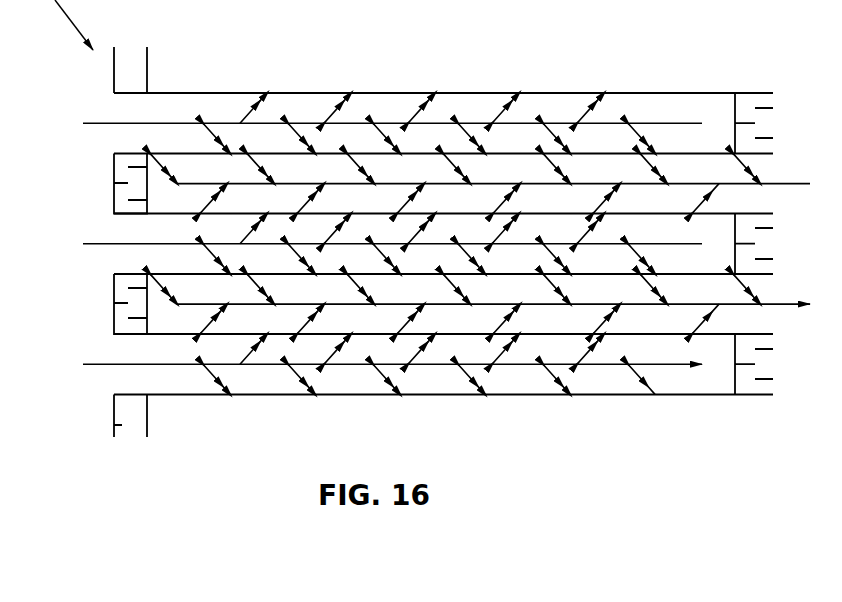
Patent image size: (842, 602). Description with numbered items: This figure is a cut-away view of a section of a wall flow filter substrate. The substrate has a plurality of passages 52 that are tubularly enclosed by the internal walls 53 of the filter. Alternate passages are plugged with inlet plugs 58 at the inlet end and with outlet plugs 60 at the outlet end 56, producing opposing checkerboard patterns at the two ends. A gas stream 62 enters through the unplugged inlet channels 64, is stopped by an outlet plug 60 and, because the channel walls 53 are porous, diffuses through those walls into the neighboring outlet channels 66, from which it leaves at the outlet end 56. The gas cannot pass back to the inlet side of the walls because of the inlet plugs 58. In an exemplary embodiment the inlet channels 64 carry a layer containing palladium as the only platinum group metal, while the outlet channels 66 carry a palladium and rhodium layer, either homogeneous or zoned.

The passages 52 is at (153, 155).
The internal walls 53 is at (401, 150).
The outlet end 56 is at (785, 92).
The inlet plugs 58 is at (120, 73).
The outlet plugs 60 is at (773, 123).
The gas stream 62 is at (192, 122).
The inlet channels 64 is at (140, 122).
The outlet channels 66 is at (771, 186).